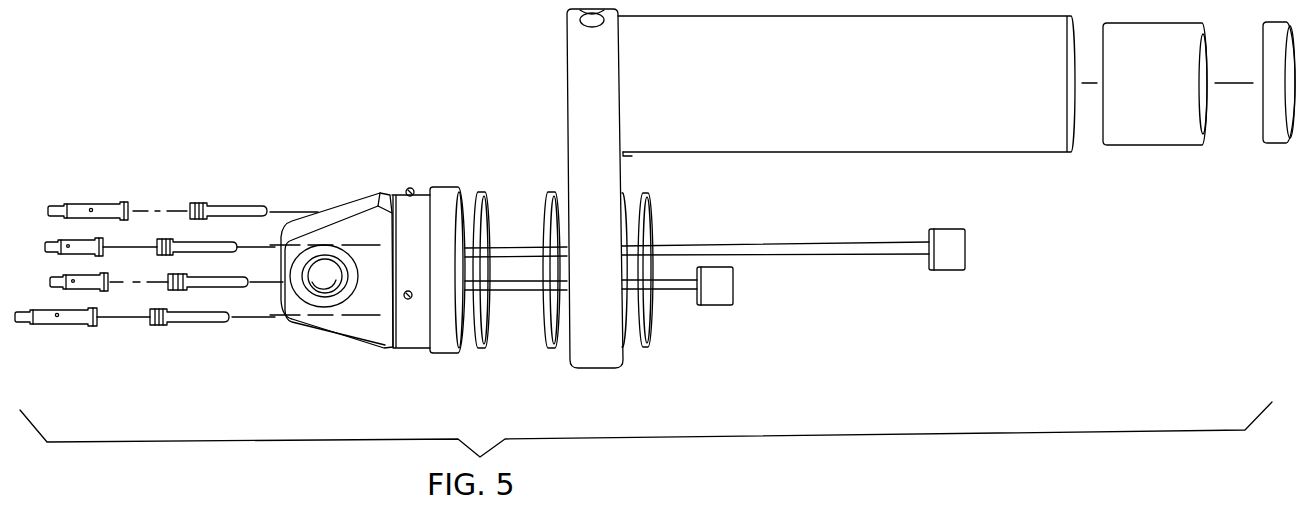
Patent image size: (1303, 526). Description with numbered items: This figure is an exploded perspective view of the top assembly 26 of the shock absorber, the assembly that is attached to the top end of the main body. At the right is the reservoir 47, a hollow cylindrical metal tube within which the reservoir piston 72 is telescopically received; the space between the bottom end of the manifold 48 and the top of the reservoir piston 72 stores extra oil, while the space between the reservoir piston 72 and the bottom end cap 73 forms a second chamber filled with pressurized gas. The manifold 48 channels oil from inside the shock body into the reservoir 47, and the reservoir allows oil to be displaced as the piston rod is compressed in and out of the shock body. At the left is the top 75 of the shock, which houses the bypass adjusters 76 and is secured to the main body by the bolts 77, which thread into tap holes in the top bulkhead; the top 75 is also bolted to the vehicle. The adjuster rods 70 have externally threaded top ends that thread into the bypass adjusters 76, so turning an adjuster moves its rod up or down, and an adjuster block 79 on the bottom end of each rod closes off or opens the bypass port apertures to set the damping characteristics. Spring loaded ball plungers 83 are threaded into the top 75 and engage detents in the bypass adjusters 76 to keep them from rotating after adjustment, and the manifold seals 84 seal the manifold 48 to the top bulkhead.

The top assembly 26 is at (1036, 197).
The reservoir 47 is at (850, 88).
The manifold 48 is at (585, 102).
The adjuster rods 70 is at (752, 252).
The reservoir piston 72 is at (1167, 94).
The bottom end cap 73 is at (1280, 133).
The top 75 is at (357, 323).
The bypass adjusters 76 is at (77, 212).
The bolts 77 is at (222, 210).
The adjuster block 79 is at (722, 288).
The spring loaded ball plungers 83 is at (403, 300).
The manifold seals 84 is at (480, 192).